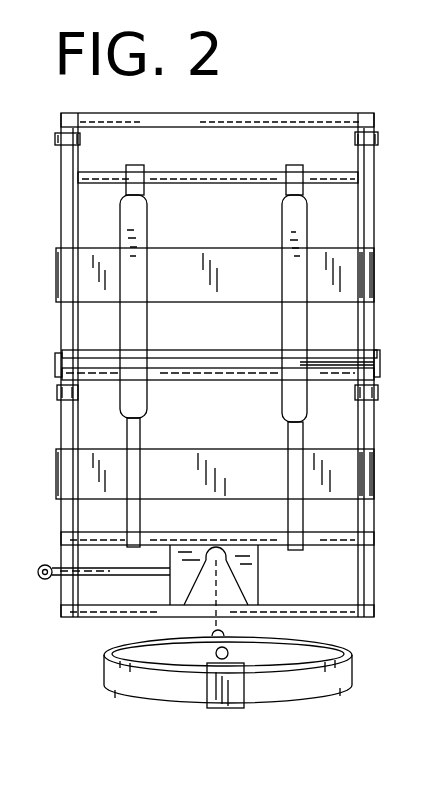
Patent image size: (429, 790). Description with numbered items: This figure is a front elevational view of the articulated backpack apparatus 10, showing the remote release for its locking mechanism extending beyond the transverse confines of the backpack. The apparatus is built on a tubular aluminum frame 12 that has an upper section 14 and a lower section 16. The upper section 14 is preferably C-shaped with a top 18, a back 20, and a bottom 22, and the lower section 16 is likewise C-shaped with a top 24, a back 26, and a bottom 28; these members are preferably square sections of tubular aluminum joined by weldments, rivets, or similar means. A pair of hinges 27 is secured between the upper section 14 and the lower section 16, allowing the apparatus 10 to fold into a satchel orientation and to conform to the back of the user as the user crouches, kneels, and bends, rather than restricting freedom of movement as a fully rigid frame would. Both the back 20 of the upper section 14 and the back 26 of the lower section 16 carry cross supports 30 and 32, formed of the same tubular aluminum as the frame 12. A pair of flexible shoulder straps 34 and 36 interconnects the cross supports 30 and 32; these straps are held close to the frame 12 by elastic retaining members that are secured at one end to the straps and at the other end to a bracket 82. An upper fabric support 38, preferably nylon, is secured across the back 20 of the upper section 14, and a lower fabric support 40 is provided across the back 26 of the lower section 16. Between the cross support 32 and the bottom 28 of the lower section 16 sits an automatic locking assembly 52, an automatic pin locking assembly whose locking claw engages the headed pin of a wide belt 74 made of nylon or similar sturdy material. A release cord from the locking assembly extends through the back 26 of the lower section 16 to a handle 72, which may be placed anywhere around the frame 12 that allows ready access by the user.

The articulated backpack apparatus 10 is at (383, 113).
The tubular aluminum frame 12 is at (205, 107).
The upper section 14 is at (378, 174).
The lower section 16 is at (378, 494).
The top 18 is at (304, 113).
The back 20 is at (374, 226).
The bottom 22 is at (186, 350).
The top 24 is at (226, 380).
The back 26 is at (378, 428).
The hinges 27 is at (378, 366).
The bottom 28 is at (342, 617).
The cross support 30 is at (228, 172).
The cross support 32 is at (330, 548).
The flexible shoulder strap 34 is at (280, 214).
The flexible shoulder strap 36 is at (150, 222).
The upper fabric support 38 is at (112, 292).
The lower fabric support 40 is at (114, 458).
The automatic locking assembly 52 is at (168, 586).
The handle 72 is at (44, 580).
The wide belt 74 is at (205, 692).
The bracket 82 is at (330, 368).